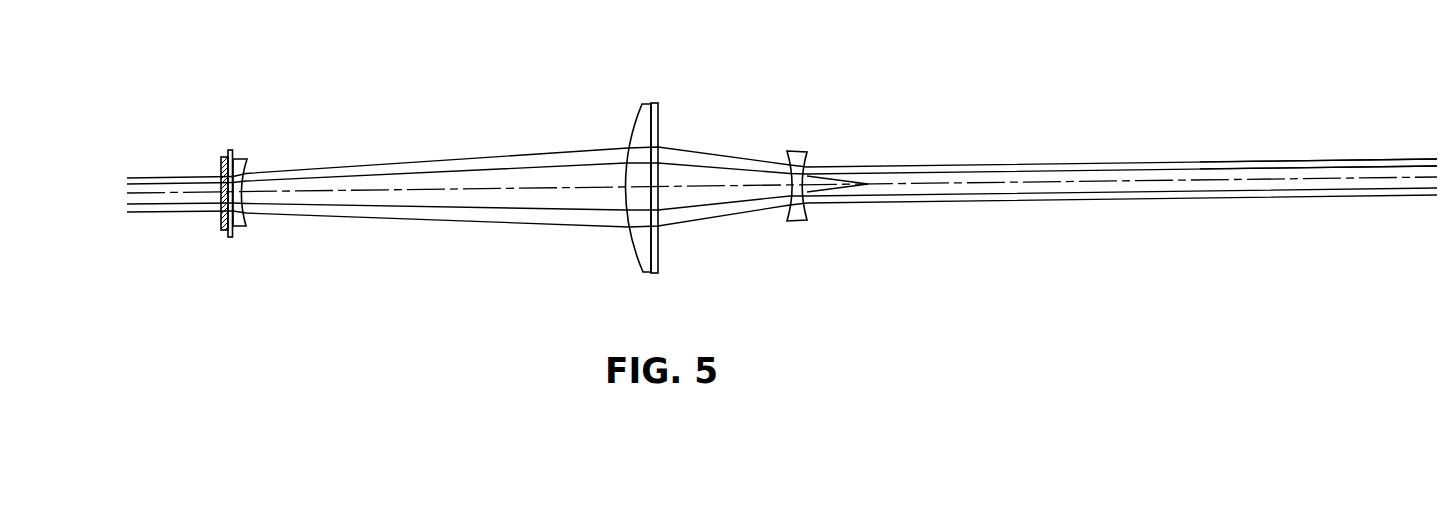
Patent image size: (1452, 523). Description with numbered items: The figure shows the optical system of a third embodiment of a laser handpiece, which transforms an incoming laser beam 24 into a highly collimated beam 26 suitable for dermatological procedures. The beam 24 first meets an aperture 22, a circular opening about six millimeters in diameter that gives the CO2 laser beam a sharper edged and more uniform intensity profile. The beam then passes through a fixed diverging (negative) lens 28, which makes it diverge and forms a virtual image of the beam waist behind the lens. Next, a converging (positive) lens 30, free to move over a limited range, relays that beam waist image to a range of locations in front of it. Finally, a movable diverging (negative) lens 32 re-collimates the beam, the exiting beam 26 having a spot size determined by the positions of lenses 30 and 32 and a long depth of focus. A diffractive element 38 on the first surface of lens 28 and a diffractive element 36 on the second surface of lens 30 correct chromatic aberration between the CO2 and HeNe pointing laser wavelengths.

The aperture 22 is at (222, 165).
The laser beam 24 is at (155, 211).
The collimated beam 26 is at (1437, 168).
The diverging lens 28 is at (245, 158).
The converging lens 30 is at (648, 103).
The final diverging lens 32 is at (793, 151).
The diffractive element 36 is at (657, 120).
The diffractive element 38 is at (232, 150).